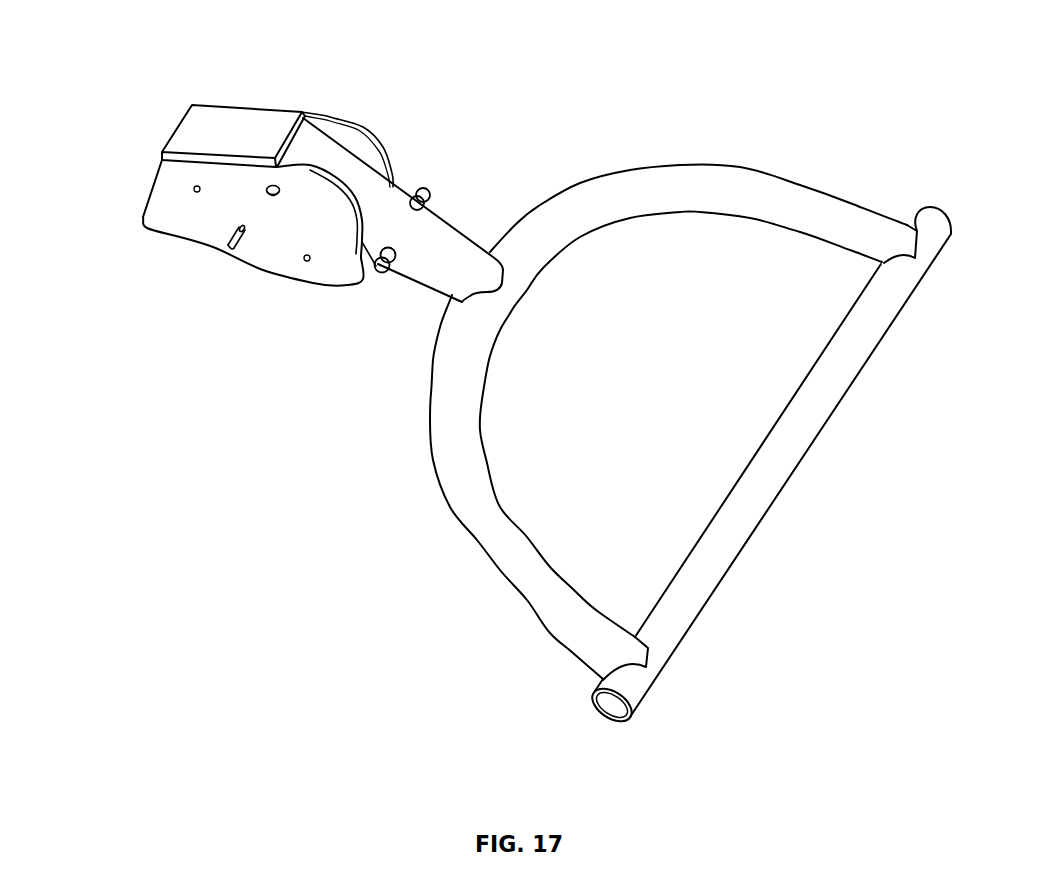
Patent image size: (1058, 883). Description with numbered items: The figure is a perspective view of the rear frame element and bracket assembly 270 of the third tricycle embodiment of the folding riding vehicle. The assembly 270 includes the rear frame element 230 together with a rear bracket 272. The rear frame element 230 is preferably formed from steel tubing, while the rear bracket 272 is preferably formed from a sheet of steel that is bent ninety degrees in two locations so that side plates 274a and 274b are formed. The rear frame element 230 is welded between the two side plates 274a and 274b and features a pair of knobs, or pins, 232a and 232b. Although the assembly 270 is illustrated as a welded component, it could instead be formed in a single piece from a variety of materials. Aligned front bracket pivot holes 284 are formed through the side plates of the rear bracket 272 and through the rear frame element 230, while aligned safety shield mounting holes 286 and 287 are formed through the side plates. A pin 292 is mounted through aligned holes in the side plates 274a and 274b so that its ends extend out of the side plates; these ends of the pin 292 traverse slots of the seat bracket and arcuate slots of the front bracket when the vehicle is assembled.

The rear frame element 230 is at (453, 228).
The rear frame element and bracket assembly 270 is at (141, 76).
The rear bracket 272 is at (216, 300).
The side plate 274a is at (152, 222).
The side plate 274b is at (359, 140).
The knob 232a is at (383, 274).
The knob 232b is at (422, 189).
The front bracket pivot hole 284 is at (276, 198).
The safety shield mounting hole 286 is at (307, 262).
The safety shield mounting hole 287 is at (196, 185).
The pin 292 is at (226, 238).